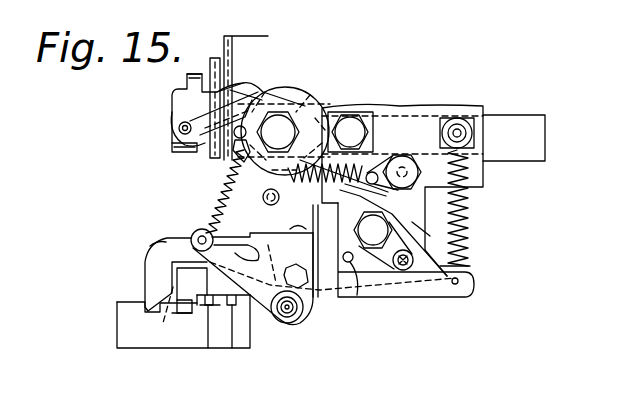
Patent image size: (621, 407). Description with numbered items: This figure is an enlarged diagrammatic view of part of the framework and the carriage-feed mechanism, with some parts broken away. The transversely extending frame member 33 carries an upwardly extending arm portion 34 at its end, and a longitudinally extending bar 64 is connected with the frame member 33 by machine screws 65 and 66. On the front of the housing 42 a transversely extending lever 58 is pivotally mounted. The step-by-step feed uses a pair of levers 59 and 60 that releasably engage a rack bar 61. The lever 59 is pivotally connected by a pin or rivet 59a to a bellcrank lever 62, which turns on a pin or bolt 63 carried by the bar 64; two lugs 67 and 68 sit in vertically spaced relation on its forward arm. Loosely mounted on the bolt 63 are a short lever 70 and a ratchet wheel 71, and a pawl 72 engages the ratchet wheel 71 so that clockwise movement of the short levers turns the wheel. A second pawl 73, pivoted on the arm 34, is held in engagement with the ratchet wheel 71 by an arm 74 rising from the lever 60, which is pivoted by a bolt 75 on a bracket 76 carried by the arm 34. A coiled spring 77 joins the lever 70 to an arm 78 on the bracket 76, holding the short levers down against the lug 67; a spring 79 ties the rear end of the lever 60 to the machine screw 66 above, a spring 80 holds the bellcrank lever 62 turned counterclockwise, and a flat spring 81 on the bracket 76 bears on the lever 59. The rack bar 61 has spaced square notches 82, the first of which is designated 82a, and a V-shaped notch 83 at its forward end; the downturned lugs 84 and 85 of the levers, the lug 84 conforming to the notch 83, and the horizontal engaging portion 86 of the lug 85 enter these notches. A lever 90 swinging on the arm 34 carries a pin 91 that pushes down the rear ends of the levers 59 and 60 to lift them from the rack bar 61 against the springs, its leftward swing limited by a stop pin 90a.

The transversely extending frame member 33 is at (400, 108).
The upwardly extending arm portion 34 is at (412, 222).
The housing 42 is at (224, 40).
The transversely extending lever 58 is at (198, 163).
The lever 59 is at (147, 264).
The pin or rivet 59a is at (322, 300).
The lever 60 is at (152, 246).
The rack bar 61 is at (118, 340).
The bellcrank lever 62 is at (262, 206).
The pin or bolt 63 is at (281, 120).
The longitudinally extending bar 64 is at (535, 120).
The machine screw 65 is at (352, 122).
The machine screw 66 is at (463, 122).
The lug 67 is at (172, 156).
The lug 68 is at (186, 80).
The short arm or lever 70 is at (178, 122).
The ratchet wheel 71 is at (312, 104).
The pawl 72 is at (238, 96).
The second pawl 73 is at (386, 200).
The arm 74 is at (332, 210).
The bolt 75 is at (284, 320).
The bracket 76 is at (300, 330).
The coiled spring 77 is at (214, 168).
The arm 78 is at (173, 240).
The spring 79 is at (470, 205).
The spring 80 is at (362, 168).
The flat spring 81 is at (262, 236).
The square notch 82 is at (220, 344).
The first square notch 82a is at (200, 344).
The V-shaped notch 83 is at (120, 318).
The arm or lug 84 is at (158, 292).
The arm or lug 85 is at (192, 318).
The engaging portion 86 is at (167, 322).
The arm or lever 90 is at (384, 270).
The stop pin 90a is at (362, 300).
The pin 91 is at (410, 270).